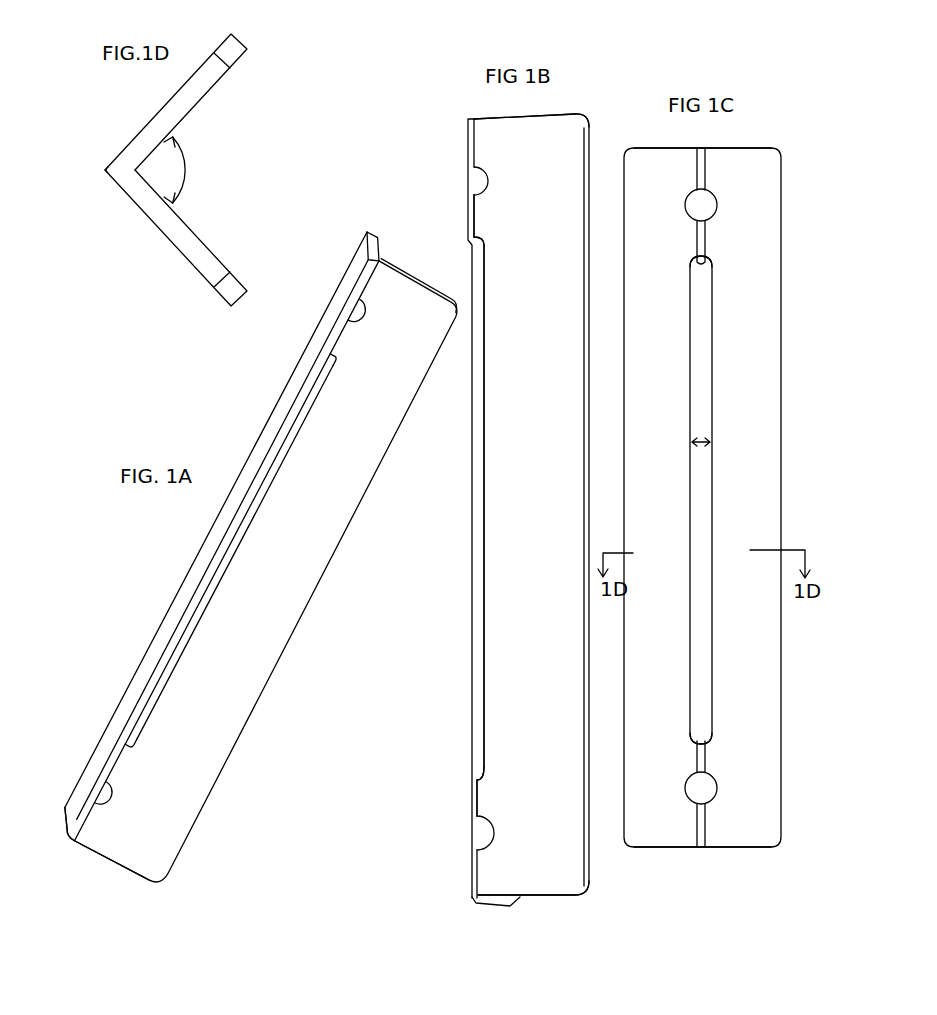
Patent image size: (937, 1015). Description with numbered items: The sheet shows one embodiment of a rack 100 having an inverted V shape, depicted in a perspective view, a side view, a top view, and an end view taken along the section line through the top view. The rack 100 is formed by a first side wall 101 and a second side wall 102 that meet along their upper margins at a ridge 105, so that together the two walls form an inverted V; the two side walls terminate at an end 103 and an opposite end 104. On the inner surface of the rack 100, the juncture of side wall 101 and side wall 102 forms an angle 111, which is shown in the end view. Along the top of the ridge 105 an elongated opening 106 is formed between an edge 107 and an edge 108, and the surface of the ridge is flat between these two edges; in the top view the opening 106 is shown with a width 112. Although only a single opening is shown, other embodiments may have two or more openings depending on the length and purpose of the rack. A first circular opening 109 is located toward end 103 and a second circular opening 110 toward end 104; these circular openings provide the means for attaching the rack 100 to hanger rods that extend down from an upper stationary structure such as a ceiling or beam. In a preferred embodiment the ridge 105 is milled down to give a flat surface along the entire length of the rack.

In FIG. 1A, the rack 100 is at (289, 577).
In FIG. 1D, the first side wall 101 is at (157, 233).
In FIG. 1A, the first side wall 101 is at (240, 687).
In FIG. 1B, the first side wall 101 is at (497, 640).
In FIG. 1C, the first side wall 101 is at (765, 623).
In FIG. 1D, the second side wall 102 is at (183, 80).
In FIG. 1A, the second side wall 102 is at (282, 403).
In FIG. 1B, the second side wall 102 is at (476, 508).
In FIG. 1C, the second side wall 102 is at (643, 185).
In FIG. 1A, the end 103 is at (366, 231).
In FIG. 1B, the end 103 is at (557, 113).
In FIG. 1C, the end 103 is at (740, 147).
In FIG. 1A, the end 104 is at (117, 872).
In FIG. 1B, the end 104 is at (537, 898).
In FIG. 1C, the end 104 is at (725, 850).
In FIG. 1D, the ridge 105 is at (104, 170).
In FIG. 1A, the ridge 105 is at (333, 328).
In FIG. 1B, the ridge 105 is at (470, 217).
In FIG. 1C, the ridge 105 is at (712, 242).
In FIG. 1A, the elongated opening 106 is at (173, 645).
In FIG. 1B, the elongated opening 106 is at (482, 543).
In FIG. 1C, the elongated opening 106 is at (702, 503).
In FIG. 1A, the edge 107 is at (332, 362).
In FIG. 1B, the edge 107 is at (472, 256).
In FIG. 1C, the edge 107 is at (715, 267).
In FIG. 1A, the edge 108 is at (137, 747).
In FIG. 1B, the edge 108 is at (477, 770).
In FIG. 1C, the edge 108 is at (702, 760).
In FIG. 1A, the first circular opening 109 is at (350, 303).
In FIG. 1B, the first circular opening 109 is at (471, 181).
In FIG. 1C, the first circular opening 109 is at (705, 202).
In FIG. 1A, the second circular opening 110 is at (100, 790).
In FIG. 1B, the second circular opening 110 is at (484, 836).
In FIG. 1C, the second circular opening 110 is at (697, 795).
In FIG. 1D, the angle 111 is at (196, 170).
In FIG. 1C, the width 112 is at (705, 442).